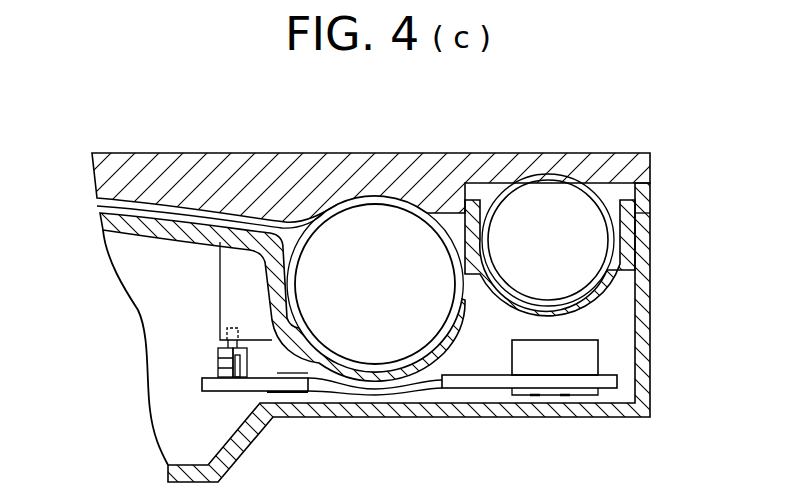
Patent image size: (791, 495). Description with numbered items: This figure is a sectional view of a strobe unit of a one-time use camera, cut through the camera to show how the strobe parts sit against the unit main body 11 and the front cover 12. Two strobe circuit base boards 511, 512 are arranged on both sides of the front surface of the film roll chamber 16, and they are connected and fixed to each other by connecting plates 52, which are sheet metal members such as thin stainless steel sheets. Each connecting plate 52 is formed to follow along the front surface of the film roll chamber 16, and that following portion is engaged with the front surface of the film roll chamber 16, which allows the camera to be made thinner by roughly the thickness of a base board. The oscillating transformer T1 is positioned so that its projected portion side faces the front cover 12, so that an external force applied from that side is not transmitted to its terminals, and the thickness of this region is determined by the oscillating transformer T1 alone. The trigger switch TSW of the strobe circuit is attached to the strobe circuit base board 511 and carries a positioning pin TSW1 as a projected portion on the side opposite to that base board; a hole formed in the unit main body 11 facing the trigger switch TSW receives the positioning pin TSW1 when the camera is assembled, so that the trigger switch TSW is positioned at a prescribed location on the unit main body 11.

The unit main body 11 is at (217, 279).
The front cover 12 is at (652, 378).
The film roll chamber 16 is at (446, 224).
The connecting plate 52 is at (428, 392).
The strobe circuit base board 511 is at (227, 393).
The strobe circuit base board 512 is at (614, 390).
The oscillating transformer T1 is at (598, 347).
The trigger switch TSW is at (195, 363).
The positioning pin TSW1 is at (217, 313).